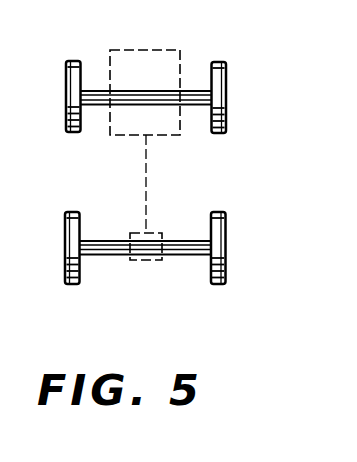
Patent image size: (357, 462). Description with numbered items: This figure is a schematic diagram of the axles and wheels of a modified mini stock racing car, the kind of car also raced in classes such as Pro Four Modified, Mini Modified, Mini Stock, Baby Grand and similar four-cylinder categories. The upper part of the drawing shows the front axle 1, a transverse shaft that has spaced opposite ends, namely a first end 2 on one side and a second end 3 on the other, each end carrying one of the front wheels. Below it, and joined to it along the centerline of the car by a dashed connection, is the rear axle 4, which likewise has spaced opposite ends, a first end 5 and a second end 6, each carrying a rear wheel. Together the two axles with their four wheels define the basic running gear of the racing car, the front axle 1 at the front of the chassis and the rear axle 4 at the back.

The front axle 1 is at (147, 90).
The first end of front axle 2 is at (203, 90).
The second end of front axle 3 is at (89, 90).
The rear axle 4 is at (117, 248).
The first end of rear axle 5 is at (204, 240).
The second end of rear axle 6 is at (89, 240).